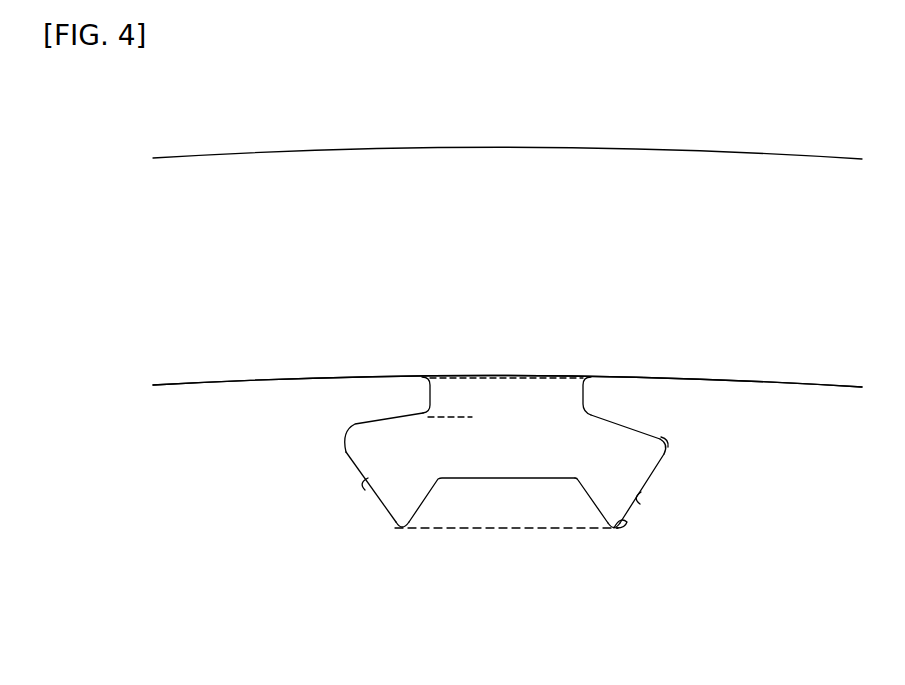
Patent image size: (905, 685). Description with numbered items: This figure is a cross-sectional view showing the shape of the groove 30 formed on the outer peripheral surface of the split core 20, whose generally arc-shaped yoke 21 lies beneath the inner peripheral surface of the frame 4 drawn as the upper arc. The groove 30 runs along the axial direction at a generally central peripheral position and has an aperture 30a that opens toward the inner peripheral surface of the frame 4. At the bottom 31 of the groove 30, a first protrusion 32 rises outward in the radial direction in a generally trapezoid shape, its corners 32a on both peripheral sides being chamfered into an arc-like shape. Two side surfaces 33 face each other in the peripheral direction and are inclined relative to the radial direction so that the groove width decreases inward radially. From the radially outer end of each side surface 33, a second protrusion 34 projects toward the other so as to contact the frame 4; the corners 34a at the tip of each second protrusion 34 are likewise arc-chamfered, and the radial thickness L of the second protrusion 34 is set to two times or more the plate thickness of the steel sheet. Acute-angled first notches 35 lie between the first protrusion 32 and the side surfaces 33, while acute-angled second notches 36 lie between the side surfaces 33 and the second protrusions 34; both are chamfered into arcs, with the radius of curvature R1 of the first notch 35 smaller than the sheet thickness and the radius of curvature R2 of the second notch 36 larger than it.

The frame 4 is at (498, 168).
The split core 20 is at (320, 370).
The yoke 21 is at (250, 402).
The groove 30 is at (517, 450).
The aperture 30a is at (580, 396).
The bottom 31 is at (430, 527).
The first protrusion 32 is at (520, 490).
The corners 32a is at (578, 478).
The side surfaces 33 is at (360, 482).
The second protrusions 34 is at (400, 394).
The corners 34a is at (588, 416).
The first notches 35 is at (627, 522).
The second notches 36 is at (670, 447).
The radius of curvature of the first notch R1 is at (402, 518).
The radius of curvature of the second notch R2 is at (354, 437).
The thickness of the second protrusion L is at (457, 386).